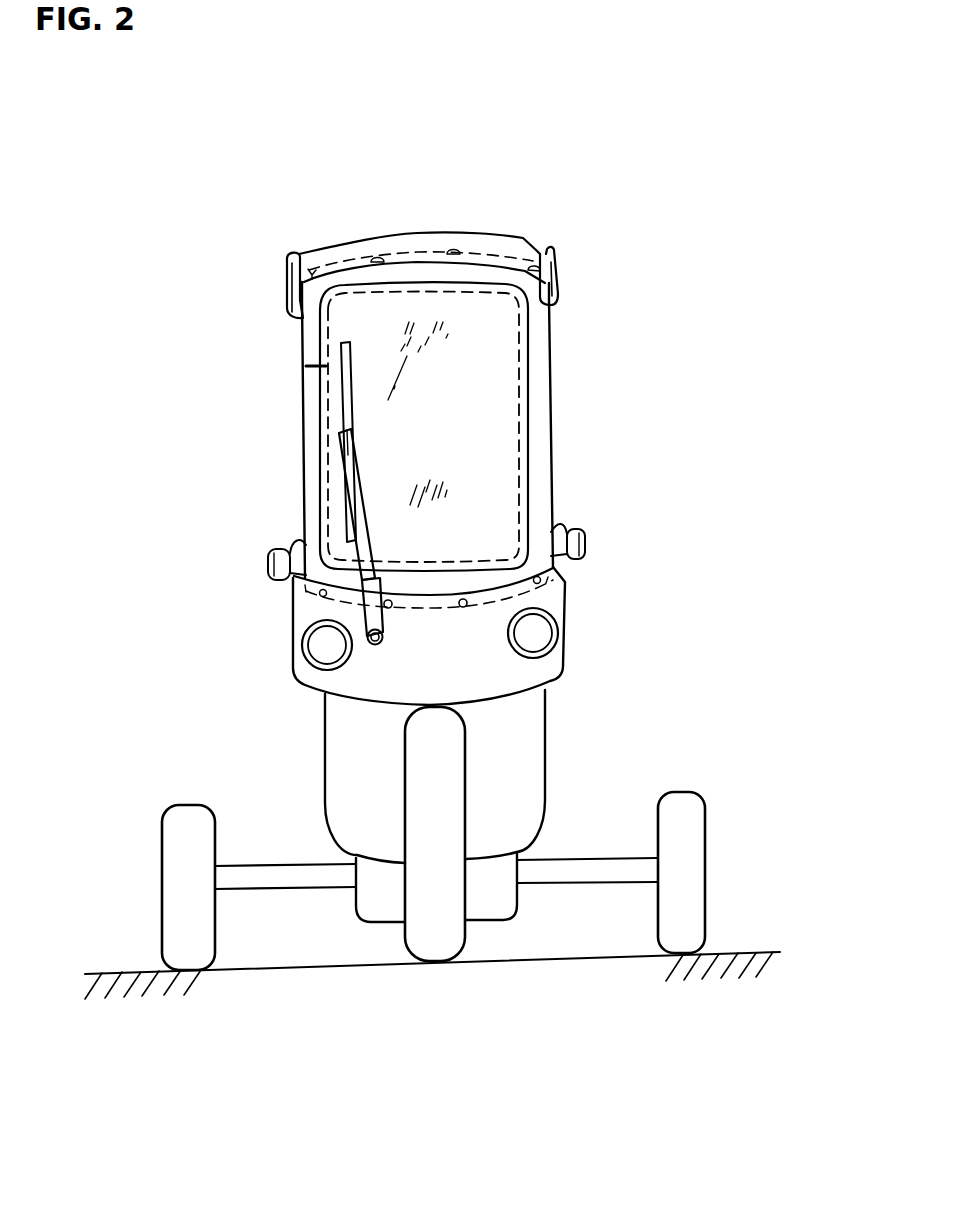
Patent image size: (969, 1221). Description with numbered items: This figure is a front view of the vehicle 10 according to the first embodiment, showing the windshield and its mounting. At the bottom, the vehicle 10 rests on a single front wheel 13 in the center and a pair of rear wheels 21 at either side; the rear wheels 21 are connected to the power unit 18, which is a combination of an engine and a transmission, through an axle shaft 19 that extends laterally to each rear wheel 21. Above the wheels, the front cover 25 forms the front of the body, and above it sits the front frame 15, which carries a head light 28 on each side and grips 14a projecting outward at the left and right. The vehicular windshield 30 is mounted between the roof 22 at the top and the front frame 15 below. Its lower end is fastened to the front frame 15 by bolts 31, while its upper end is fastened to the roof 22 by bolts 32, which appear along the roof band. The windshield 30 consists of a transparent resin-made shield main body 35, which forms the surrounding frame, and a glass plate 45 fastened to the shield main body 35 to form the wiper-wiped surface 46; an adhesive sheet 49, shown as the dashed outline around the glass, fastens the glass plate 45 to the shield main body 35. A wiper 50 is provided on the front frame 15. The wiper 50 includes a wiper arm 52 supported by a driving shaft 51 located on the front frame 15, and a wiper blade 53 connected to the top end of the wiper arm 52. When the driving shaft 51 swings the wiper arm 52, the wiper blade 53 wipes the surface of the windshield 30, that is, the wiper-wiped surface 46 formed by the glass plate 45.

The vehicle 10 is at (628, 191).
The front wheel 13 is at (443, 765).
The grips 14a is at (273, 537).
The front frame 15 is at (567, 580).
The power unit 18 is at (388, 907).
The axle shaft 19 is at (257, 880).
The rear wheels 21 is at (175, 857).
The roof 22 is at (497, 236).
The front cover 25 is at (343, 753).
The head light 28 is at (538, 632).
The vehicular windshield 30 is at (548, 332).
The bolts 31 is at (462, 608).
The bolts 32 is at (453, 251).
The shield main body 35 is at (535, 378).
The glass plate 45 is at (493, 437).
The wiper-wiped surface 46 is at (348, 322).
The adhesive sheet 49 is at (518, 494).
The wiper 50 is at (317, 365).
The driving shaft 51 is at (364, 633).
The wiper arm 52 is at (345, 492).
The wiper blade 53 is at (345, 398).